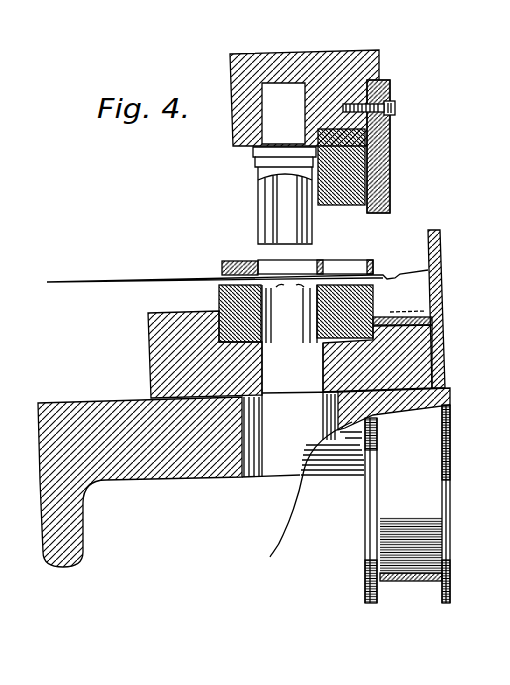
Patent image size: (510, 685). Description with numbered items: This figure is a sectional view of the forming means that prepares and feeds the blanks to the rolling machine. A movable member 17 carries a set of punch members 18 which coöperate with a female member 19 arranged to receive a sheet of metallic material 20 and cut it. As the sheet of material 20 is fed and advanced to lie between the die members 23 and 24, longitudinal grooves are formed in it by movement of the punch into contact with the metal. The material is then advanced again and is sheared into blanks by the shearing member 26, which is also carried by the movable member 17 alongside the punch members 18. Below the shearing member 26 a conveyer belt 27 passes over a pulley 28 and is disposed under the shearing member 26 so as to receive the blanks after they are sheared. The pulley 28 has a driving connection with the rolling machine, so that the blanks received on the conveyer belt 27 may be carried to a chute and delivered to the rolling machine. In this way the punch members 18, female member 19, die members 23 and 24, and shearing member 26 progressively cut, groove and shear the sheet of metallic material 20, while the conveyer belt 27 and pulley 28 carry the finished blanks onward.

The movable member 17 is at (310, 53).
The punch members 18 is at (262, 187).
The female member 19 is at (216, 329).
The sheet of metallic material 20 is at (115, 271).
The die member 23 is at (346, 205).
The die member 24 is at (375, 295).
The shearing member 26 is at (389, 140).
The conveyer belt 27 is at (400, 325).
The pulley 28 is at (378, 602).